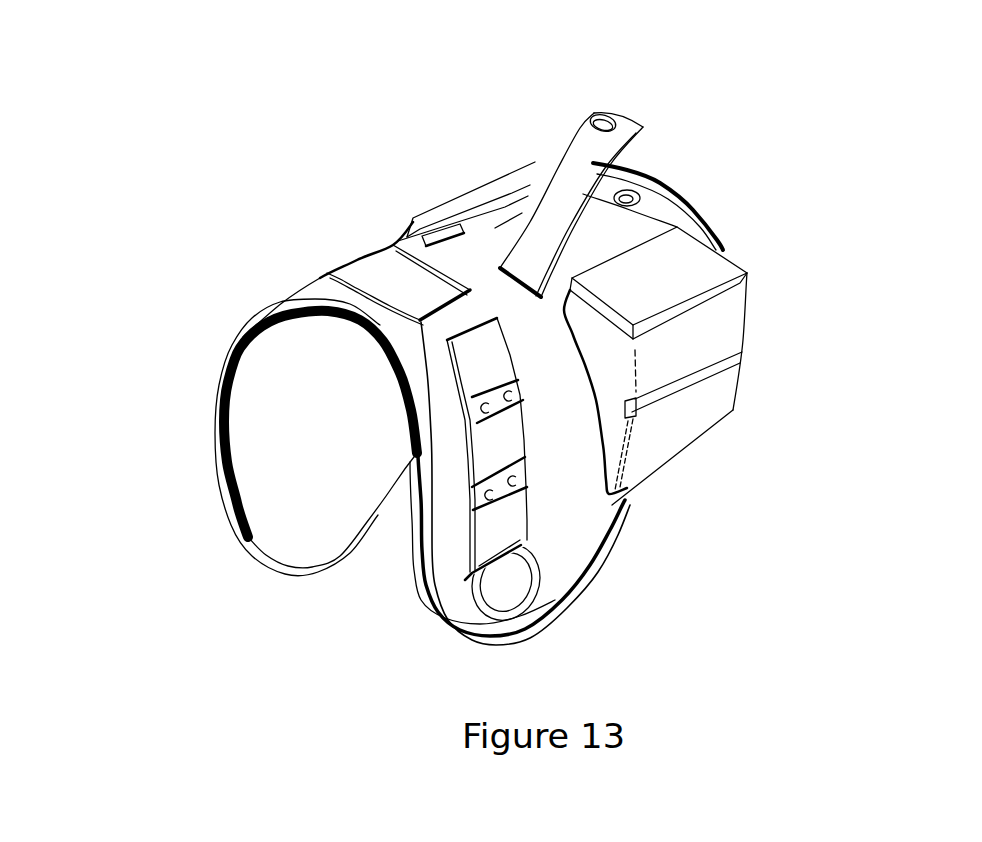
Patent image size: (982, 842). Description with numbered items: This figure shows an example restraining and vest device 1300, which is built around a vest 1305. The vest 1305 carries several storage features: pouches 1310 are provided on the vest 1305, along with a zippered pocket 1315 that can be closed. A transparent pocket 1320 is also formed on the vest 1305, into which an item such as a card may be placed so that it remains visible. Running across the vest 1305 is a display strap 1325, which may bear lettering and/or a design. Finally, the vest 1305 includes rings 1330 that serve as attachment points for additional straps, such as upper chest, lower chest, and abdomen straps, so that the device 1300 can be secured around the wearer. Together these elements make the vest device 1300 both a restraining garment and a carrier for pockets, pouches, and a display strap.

The restraining and vest device 1300 is at (738, 131).
The vest 1305 is at (265, 495).
The pouches 1310 is at (450, 200).
The zippered pocket 1315 is at (680, 390).
The transparent pocket 1320 is at (385, 268).
The display strap 1325 is at (582, 148).
The rings 1330 is at (523, 597).